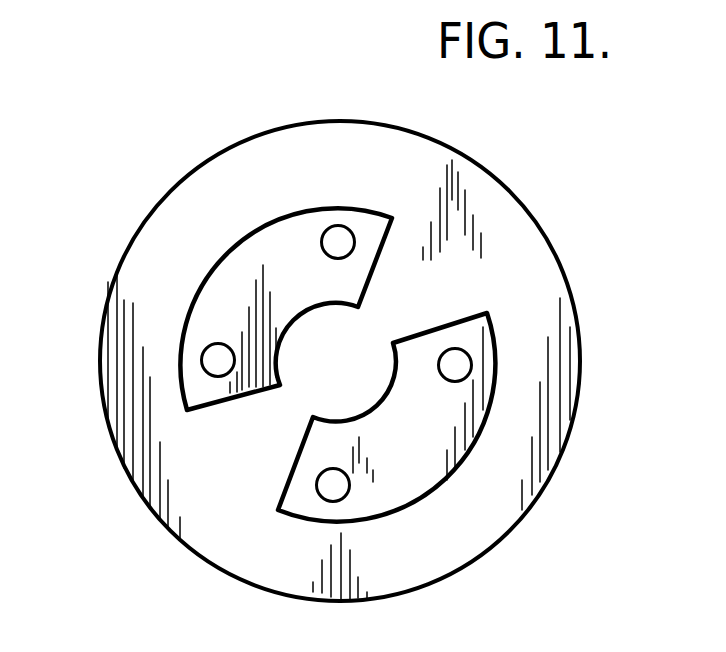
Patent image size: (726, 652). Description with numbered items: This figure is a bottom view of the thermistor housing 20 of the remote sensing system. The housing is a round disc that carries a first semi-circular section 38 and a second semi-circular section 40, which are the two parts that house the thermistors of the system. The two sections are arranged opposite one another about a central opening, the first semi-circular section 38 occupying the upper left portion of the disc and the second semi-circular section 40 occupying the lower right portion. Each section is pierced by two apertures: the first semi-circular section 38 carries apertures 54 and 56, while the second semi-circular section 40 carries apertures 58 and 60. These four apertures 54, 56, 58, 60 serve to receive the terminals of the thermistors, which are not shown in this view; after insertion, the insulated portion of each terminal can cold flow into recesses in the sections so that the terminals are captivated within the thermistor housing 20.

The thermistor housing 20 is at (116, 483).
The first semi-circular section 38 is at (180, 338).
The second semi-circular section 40 is at (497, 392).
The aperture 54 is at (205, 374).
The aperture 56 is at (330, 227).
The aperture 58 is at (470, 352).
The aperture 60 is at (323, 497).